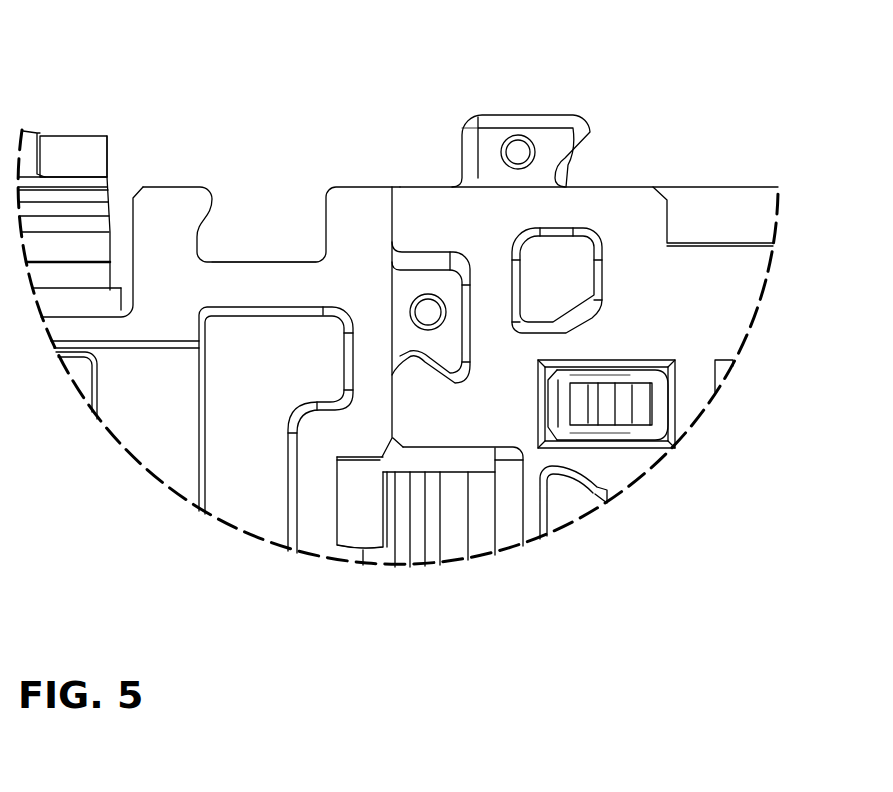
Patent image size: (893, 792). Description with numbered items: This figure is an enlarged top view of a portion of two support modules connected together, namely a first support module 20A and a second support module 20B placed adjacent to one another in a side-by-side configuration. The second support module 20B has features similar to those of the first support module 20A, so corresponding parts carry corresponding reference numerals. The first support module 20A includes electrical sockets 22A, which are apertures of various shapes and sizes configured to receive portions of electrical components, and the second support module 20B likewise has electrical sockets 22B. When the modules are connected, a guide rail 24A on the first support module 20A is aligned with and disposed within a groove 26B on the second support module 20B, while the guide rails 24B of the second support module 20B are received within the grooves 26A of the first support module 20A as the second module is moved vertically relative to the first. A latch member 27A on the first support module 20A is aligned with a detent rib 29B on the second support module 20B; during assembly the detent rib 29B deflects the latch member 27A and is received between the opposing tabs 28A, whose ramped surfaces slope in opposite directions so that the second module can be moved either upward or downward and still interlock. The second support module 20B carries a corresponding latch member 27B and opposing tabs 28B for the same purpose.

The first support module 20A is at (619, 186).
The second support module 20B is at (174, 186).
The electrical socket 22A is at (642, 408).
The electrical socket 22B is at (230, 482).
The guide rail 24A is at (516, 122).
The guide rail 24B is at (405, 288).
The groove 26A is at (428, 252).
The groove 26B is at (258, 262).
The latch member 27A is at (450, 538).
The latch member 27B is at (82, 247).
The opposing tabs 28A is at (366, 525).
The opposing tabs 28B is at (67, 148).
The detent rib 29B is at (345, 552).